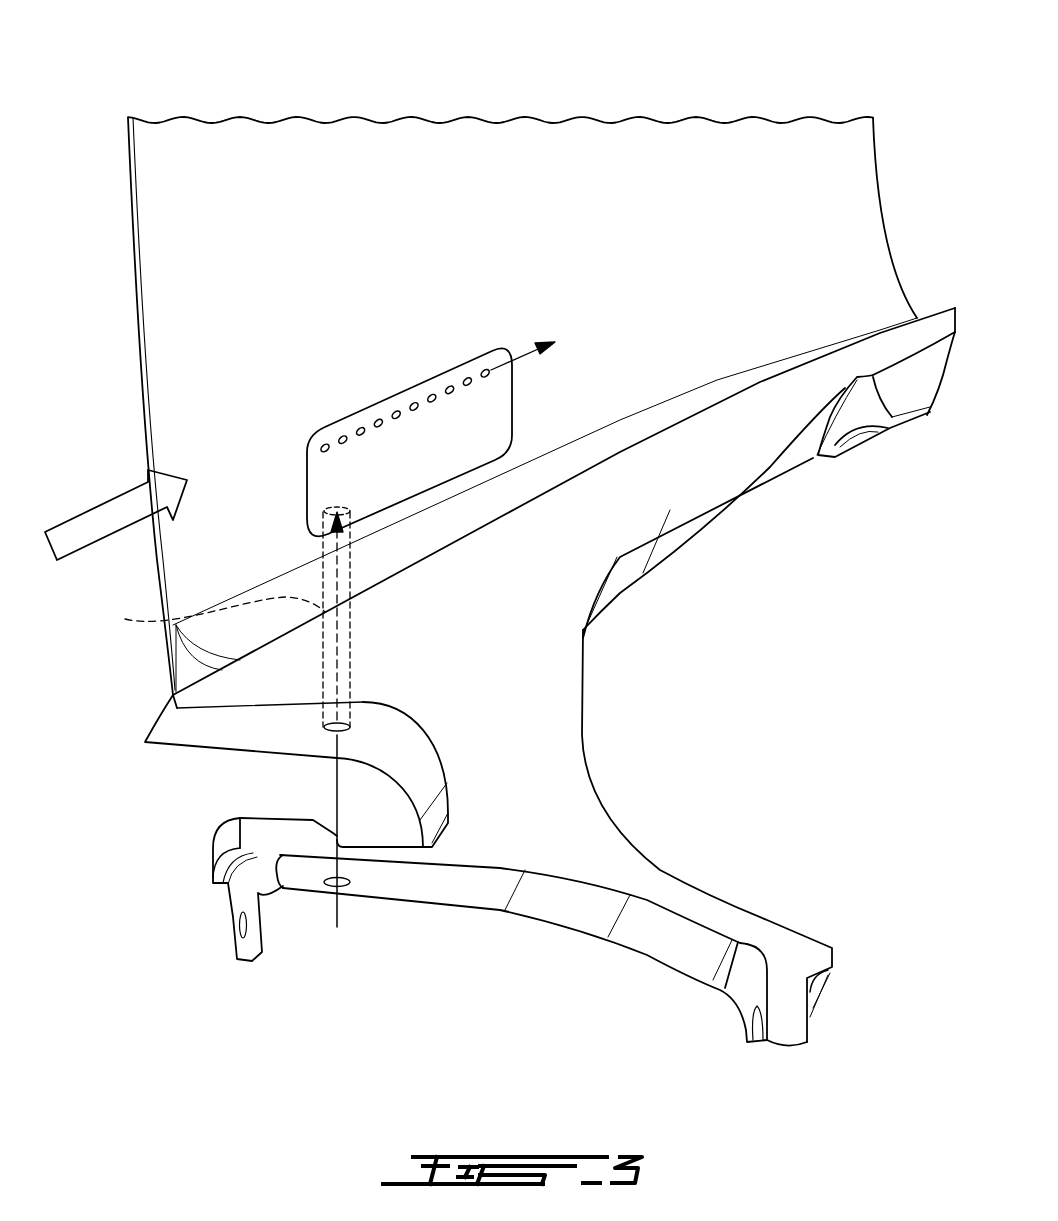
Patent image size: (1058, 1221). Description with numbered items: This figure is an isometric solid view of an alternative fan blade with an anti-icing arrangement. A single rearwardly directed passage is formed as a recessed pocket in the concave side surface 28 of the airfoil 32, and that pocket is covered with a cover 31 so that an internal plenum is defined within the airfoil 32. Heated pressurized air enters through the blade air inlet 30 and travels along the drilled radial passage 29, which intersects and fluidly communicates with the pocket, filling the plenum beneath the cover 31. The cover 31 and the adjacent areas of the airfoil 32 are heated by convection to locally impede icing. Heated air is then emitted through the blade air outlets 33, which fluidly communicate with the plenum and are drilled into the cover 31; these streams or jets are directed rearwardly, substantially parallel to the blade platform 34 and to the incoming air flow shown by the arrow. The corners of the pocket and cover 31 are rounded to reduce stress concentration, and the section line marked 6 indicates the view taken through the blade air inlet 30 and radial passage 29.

The concave side surface 28 is at (693, 217).
The airfoil 32 is at (230, 228).
The radial passage 29 is at (208, 644).
The blade platform 34 is at (620, 452).
The cover 31 is at (462, 447).
The blade air outlets 33 is at (433, 398).
The blade air inlet 30 is at (328, 733).
The section line 6- 6 is at (185, 1025).